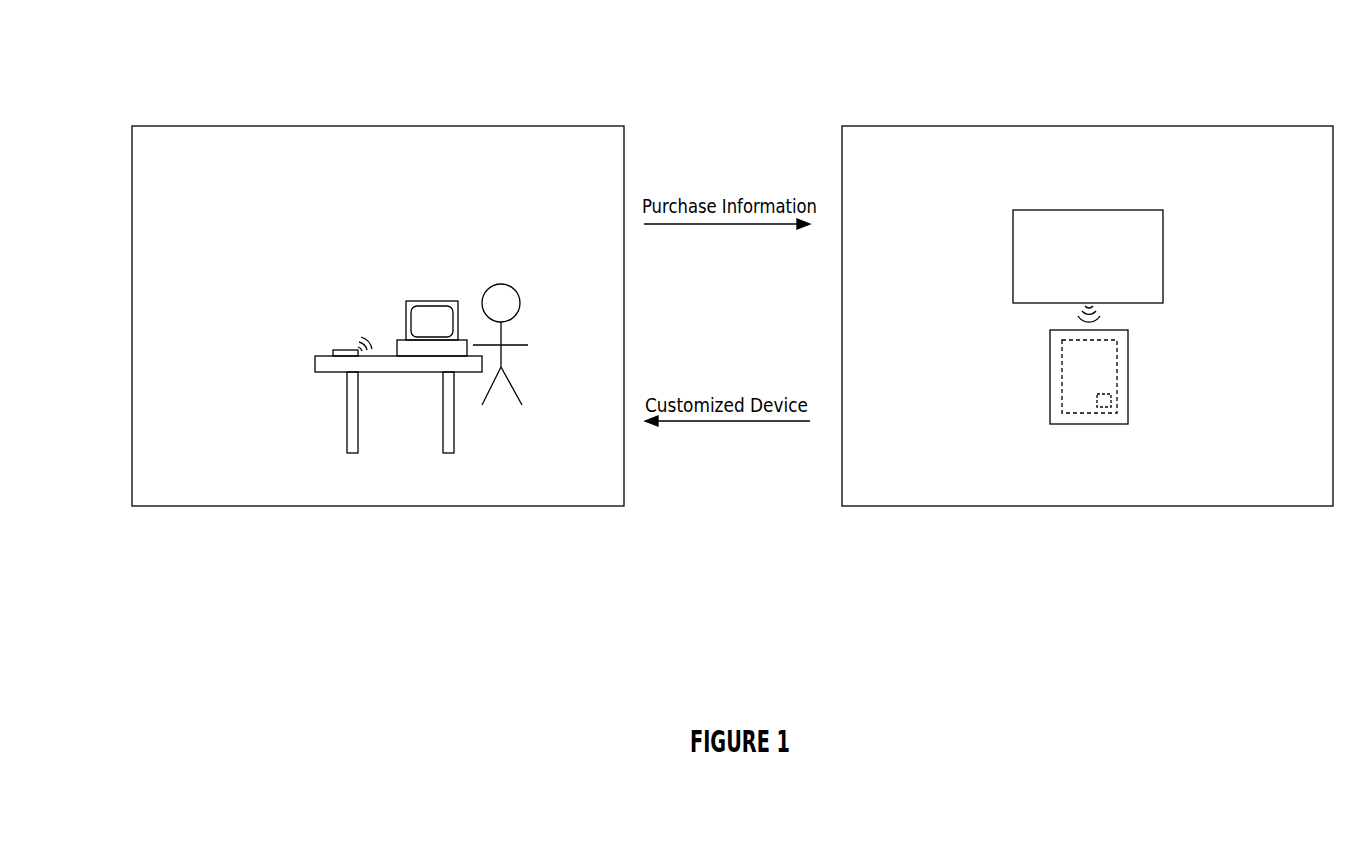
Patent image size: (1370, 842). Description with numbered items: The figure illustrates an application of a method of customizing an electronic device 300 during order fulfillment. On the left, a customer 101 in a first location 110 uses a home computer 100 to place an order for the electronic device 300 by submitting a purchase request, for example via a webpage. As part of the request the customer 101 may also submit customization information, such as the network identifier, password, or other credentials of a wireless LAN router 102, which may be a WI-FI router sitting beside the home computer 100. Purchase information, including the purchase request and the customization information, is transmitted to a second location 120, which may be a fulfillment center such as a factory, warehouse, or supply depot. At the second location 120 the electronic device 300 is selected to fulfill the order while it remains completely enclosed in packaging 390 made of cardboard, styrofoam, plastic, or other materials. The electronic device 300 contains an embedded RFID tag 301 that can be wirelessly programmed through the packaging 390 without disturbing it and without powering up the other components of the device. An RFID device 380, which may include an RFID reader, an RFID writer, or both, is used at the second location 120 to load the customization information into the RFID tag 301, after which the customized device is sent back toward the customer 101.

The first location 110 is at (316, 100).
The second location 120 is at (1054, 105).
The home computer 100 is at (424, 301).
The customer 101 is at (519, 345).
The wireless LAN router 102 is at (333, 352).
The RFID device 380 is at (1013, 254).
The packaging 390 is at (1050, 370).
The electronic device 300 is at (1117, 380).
The RFID tag 301 is at (1108, 407).